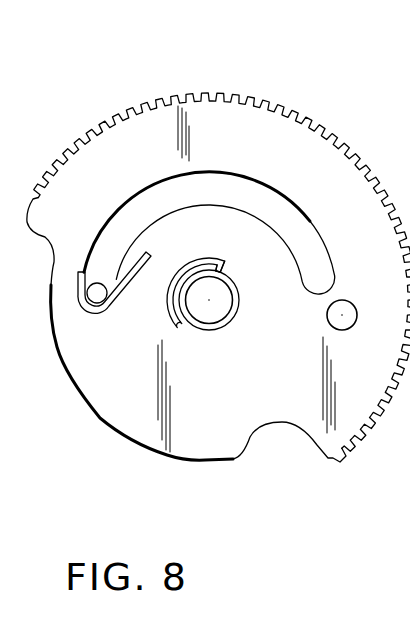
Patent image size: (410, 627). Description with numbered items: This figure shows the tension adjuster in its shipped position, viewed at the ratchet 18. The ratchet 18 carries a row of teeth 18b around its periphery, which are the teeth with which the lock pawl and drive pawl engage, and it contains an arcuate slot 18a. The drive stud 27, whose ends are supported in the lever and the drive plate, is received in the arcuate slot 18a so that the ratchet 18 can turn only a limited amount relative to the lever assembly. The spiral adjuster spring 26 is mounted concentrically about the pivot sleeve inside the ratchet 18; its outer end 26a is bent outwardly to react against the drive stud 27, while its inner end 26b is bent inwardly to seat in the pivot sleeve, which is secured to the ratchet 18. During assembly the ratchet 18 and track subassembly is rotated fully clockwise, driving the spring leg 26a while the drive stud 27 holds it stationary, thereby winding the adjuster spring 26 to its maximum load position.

The ratchet 18 is at (143, 120).
The arcuate slot 18a is at (240, 190).
The teeth 18b is at (232, 94).
The spiral adjuster spring 26 is at (175, 276).
The outer end of the adjuster spring 26a is at (99, 314).
The spring tab end 26b is at (226, 264).
The drive stud 27 is at (100, 284).